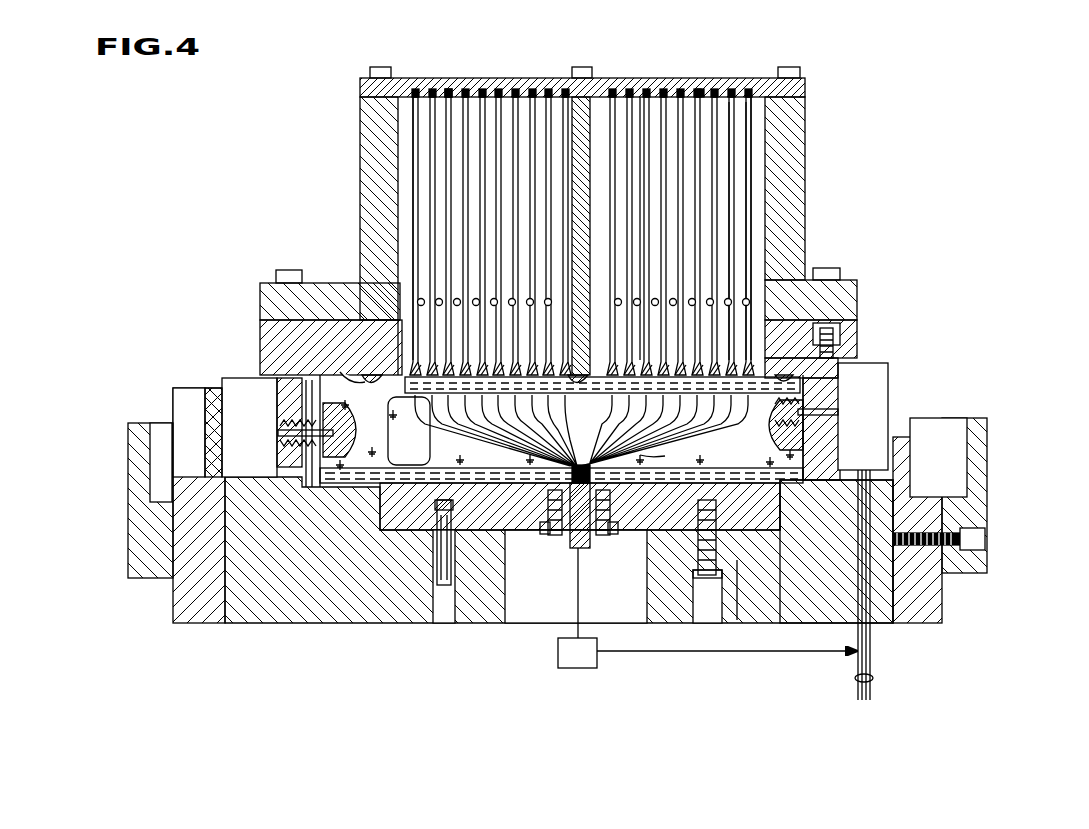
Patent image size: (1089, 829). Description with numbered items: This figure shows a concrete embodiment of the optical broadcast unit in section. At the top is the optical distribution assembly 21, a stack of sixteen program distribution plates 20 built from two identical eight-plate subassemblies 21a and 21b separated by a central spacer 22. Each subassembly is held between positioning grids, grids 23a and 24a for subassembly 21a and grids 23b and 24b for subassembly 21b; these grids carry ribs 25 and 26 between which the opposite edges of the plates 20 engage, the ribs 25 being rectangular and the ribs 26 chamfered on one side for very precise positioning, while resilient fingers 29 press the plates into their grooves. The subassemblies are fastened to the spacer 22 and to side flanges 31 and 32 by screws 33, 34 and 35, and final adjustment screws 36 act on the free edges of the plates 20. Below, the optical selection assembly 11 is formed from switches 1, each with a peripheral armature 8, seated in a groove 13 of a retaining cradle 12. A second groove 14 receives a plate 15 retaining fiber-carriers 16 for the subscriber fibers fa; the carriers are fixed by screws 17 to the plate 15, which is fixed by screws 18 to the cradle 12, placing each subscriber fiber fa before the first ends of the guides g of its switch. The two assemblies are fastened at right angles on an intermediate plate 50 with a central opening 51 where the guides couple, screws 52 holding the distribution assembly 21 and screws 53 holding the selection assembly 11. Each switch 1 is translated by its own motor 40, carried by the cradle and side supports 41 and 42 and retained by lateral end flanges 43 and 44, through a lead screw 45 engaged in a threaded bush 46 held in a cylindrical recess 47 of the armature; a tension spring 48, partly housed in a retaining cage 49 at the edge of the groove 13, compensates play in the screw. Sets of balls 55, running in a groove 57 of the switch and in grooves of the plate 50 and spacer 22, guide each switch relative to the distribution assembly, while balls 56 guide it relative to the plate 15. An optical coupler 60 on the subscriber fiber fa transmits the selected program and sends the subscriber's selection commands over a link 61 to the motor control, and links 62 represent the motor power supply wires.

The switch 1 is at (325, 460).
The peripheral armature 8 is at (805, 495).
The optical selection assembly 11 is at (355, 470).
The retaining cradle 12 is at (305, 590).
The groove 13 is at (308, 480).
The groove 14 is at (775, 600).
The plate 15 is at (480, 535).
The fiber-carrier 16 is at (578, 548).
The screws 17 is at (550, 535).
The screws 18 is at (440, 580).
The program distribution plate 20 is at (728, 158).
The optical distribution assembly 21 is at (408, 127).
The subassembly 21a is at (757, 215).
The subassembly 21b is at (410, 193).
The central spacer 22 is at (575, 92).
The grid 23a is at (725, 96).
The grid 23b is at (470, 96).
The grid 24a is at (795, 312).
The grid 24b is at (594, 421).
The ribs 25 is at (448, 92).
The ribs 26 is at (640, 415).
The resilient fingers 29 is at (640, 96).
The side flange 31 is at (790, 178).
The side flange 32 is at (380, 160).
The screw 33 is at (790, 70).
The screw 34 is at (584, 72).
The screw 35 is at (377, 70).
The final adjustment screw 36 is at (455, 300).
The motor 40 is at (865, 375).
The side support 41 is at (950, 532).
The side support 42 is at (205, 590).
The lateral end flange 43 is at (985, 462).
The lateral end flange 44 is at (140, 578).
The lead screw 45 is at (775, 448).
The threaded bush 46 is at (821, 438).
The cylindrical recess 47 is at (775, 425).
The spring 48 is at (300, 418).
The retaining cage 49 is at (300, 445).
The intermediate plate 50 is at (270, 355).
The central opening 51 is at (405, 345).
The screws 52 is at (283, 272).
The screws 53 is at (828, 336).
The guide balls 55 is at (366, 375).
The balls 56 is at (480, 455).
The groove 57 is at (340, 372).
The optical coupler 60 is at (565, 668).
The link 61 is at (675, 651).
The links 62 is at (873, 680).
The subscriber fiber fa is at (580, 580).
The guides g is at (652, 461).